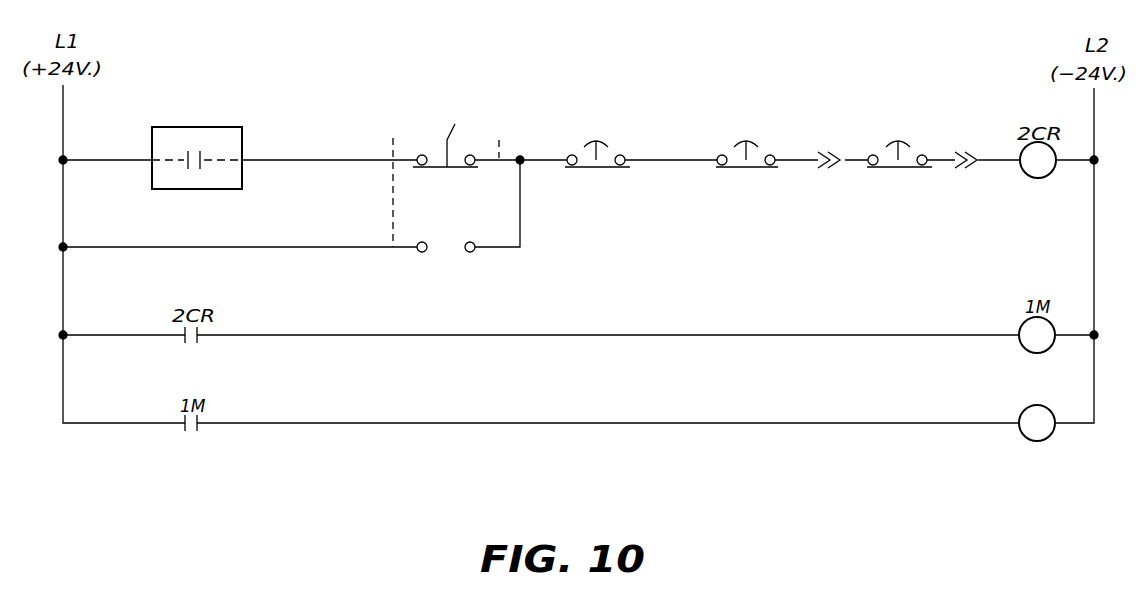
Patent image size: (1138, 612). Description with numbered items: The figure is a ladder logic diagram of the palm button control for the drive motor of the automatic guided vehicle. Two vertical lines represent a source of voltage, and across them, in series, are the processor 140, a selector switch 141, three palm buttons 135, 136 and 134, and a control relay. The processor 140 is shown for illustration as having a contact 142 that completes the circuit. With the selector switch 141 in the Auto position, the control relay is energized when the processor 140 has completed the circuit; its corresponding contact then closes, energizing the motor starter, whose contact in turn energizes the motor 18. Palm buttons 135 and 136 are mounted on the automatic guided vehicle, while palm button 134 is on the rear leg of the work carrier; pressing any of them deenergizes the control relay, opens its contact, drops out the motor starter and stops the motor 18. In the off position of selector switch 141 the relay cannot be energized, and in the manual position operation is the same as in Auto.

The processor 140 is at (244, 141).
The contact 142 is at (192, 168).
The selector switch 141 is at (454, 168).
The palm button 135 is at (612, 168).
The palm button 136 is at (765, 168).
The palm button 134 is at (916, 168).
The motor 18 is at (1025, 440).